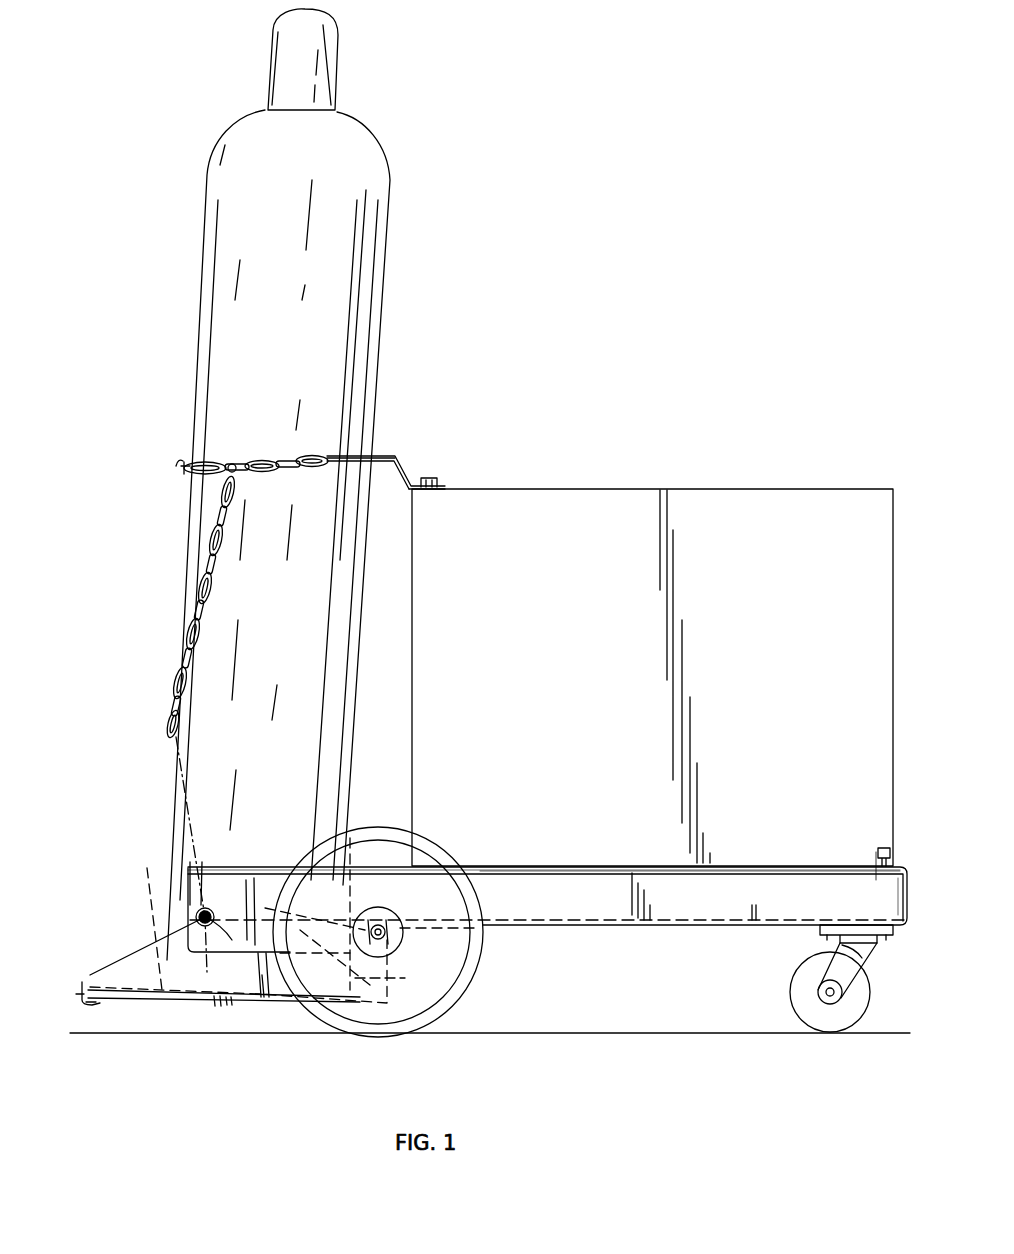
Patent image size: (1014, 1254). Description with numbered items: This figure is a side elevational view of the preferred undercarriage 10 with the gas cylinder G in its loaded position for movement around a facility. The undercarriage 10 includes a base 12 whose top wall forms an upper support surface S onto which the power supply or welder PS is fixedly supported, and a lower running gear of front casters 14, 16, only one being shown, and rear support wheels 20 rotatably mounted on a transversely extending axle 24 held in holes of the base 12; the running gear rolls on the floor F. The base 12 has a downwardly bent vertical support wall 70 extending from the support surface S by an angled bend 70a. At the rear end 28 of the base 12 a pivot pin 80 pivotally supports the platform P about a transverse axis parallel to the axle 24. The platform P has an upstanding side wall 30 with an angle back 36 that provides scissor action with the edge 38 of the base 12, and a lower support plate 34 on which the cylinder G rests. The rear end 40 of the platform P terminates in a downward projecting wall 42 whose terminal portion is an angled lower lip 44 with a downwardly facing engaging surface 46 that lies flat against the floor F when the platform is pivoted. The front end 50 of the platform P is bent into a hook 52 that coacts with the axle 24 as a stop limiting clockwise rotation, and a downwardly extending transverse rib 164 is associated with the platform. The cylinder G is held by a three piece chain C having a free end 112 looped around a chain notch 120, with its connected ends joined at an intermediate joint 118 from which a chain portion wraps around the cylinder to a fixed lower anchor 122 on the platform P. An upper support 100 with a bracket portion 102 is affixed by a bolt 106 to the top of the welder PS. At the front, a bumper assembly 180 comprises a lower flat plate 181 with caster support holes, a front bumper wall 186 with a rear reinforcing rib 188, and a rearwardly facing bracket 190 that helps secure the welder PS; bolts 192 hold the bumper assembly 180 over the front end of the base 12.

The gas cylinder G is at (375, 243).
The power supply PS is at (756, 500).
The upper support 100 is at (402, 456).
The chain notch 120 is at (343, 457).
The bolt 106 is at (437, 480).
The bracket portion 102 is at (414, 492).
The free end 112 is at (315, 455).
The intermediate joint 118 is at (232, 467).
The chain C is at (208, 546).
The undercarriage 10 is at (547, 938).
The base 12 is at (600, 927).
The upper support surface S is at (732, 864).
The angled bend 70a is at (553, 867).
The front bumper wall 186 is at (898, 885).
The rear end 28 is at (215, 903).
The pivot pin 80 is at (212, 905).
The vertical support wall 70 is at (207, 900).
The side wall 30 is at (132, 955).
The lower support plate 34 is at (145, 917).
The rear end 40 is at (229, 1009).
The lower lip 44 is at (100, 1002).
The wall 42 is at (78, 1000).
The lower engaging surface 46 is at (92, 1004).
The lower anchor 122 is at (216, 1000).
The transverse rib 164 is at (229, 1000).
The platform P is at (297, 1000).
The edge 38 is at (259, 955).
The rear support wheel 20 is at (441, 1005).
The hook 52 is at (385, 922).
The axle 24 is at (390, 935).
The angle back 36 is at (394, 981).
The front end 50 is at (376, 1010).
The floor F is at (670, 1032).
The front bumper assembly 180 is at (814, 974).
The lower plate 181 is at (787, 927).
The front caster 14 is at (832, 1010).
The front caster 16 is at (833, 1017).
The bolt 192 is at (882, 850).
The rearwardly facing bracket 190 is at (878, 855).
The reinforcing rib 188 is at (752, 910).